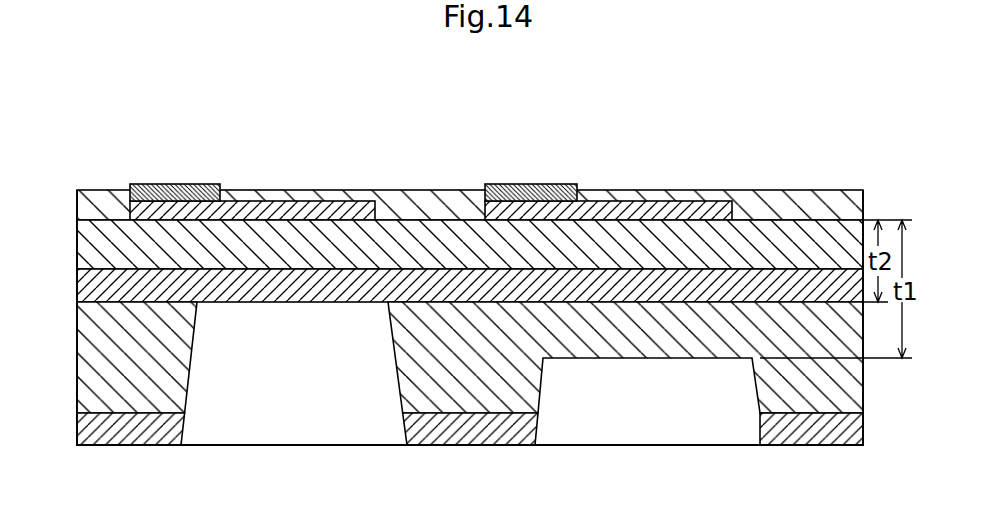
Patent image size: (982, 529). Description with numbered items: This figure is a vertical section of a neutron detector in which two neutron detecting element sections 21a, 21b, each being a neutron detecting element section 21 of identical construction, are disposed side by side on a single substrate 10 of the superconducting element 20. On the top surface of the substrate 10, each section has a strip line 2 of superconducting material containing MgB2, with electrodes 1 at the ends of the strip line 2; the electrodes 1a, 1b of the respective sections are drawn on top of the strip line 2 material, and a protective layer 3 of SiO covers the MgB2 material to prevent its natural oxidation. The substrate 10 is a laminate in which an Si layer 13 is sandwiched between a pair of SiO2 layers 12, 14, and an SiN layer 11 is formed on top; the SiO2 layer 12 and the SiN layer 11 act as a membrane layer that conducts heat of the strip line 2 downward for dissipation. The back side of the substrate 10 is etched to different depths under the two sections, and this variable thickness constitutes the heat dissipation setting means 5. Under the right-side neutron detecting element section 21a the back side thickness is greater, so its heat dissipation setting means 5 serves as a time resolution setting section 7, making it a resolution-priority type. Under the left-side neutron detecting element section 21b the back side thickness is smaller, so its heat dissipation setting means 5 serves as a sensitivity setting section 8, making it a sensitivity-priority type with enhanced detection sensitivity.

The electrodes 1 is at (353, 158).
The upper electrode 1a is at (530, 184).
The upper electrode 1b is at (175, 184).
The strip line 2 is at (305, 201).
The protective layer 3 is at (413, 190).
The heat dissipation setting means 5 is at (470, 404).
The time resolution setting section 7 is at (668, 413).
The sensitivity setting section 8 is at (300, 415).
The substrate 10 is at (447, 292).
The SiN layer 11 is at (785, 223).
The SiO2 layer 12 is at (332, 303).
The Si layer 13 is at (185, 353).
The SiO2 layer 14 is at (535, 418).
The superconducting element 20 is at (134, 474).
The neutron detecting element section 21 is at (489, 116).
The right-side neutron detecting element section 21a is at (723, 142).
The left-side neutron detecting element section 21b is at (255, 142).